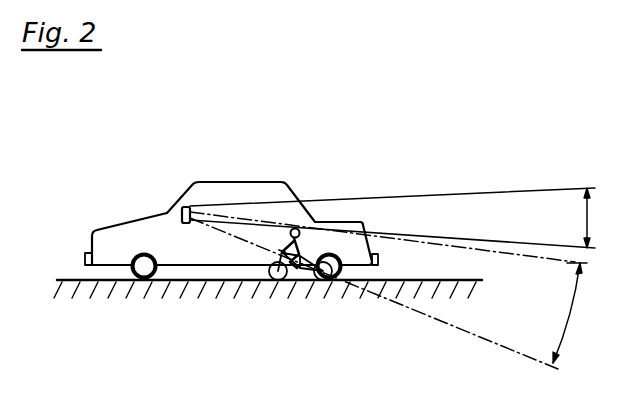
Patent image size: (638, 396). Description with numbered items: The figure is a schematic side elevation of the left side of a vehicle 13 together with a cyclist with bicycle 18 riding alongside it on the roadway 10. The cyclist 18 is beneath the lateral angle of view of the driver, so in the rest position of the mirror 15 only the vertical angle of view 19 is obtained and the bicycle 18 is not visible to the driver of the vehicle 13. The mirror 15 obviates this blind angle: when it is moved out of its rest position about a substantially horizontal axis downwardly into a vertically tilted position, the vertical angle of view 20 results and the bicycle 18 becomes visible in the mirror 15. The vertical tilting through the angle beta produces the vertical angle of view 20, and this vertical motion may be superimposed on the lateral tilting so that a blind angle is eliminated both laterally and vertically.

The roadway 10 is at (441, 268).
The vehicle 13 is at (125, 232).
The mirror 15 is at (184, 206).
The cyclist with bicycle 18 is at (273, 250).
The vertical angle of view 19 is at (575, 218).
The vertical angle of view 20 is at (561, 313).